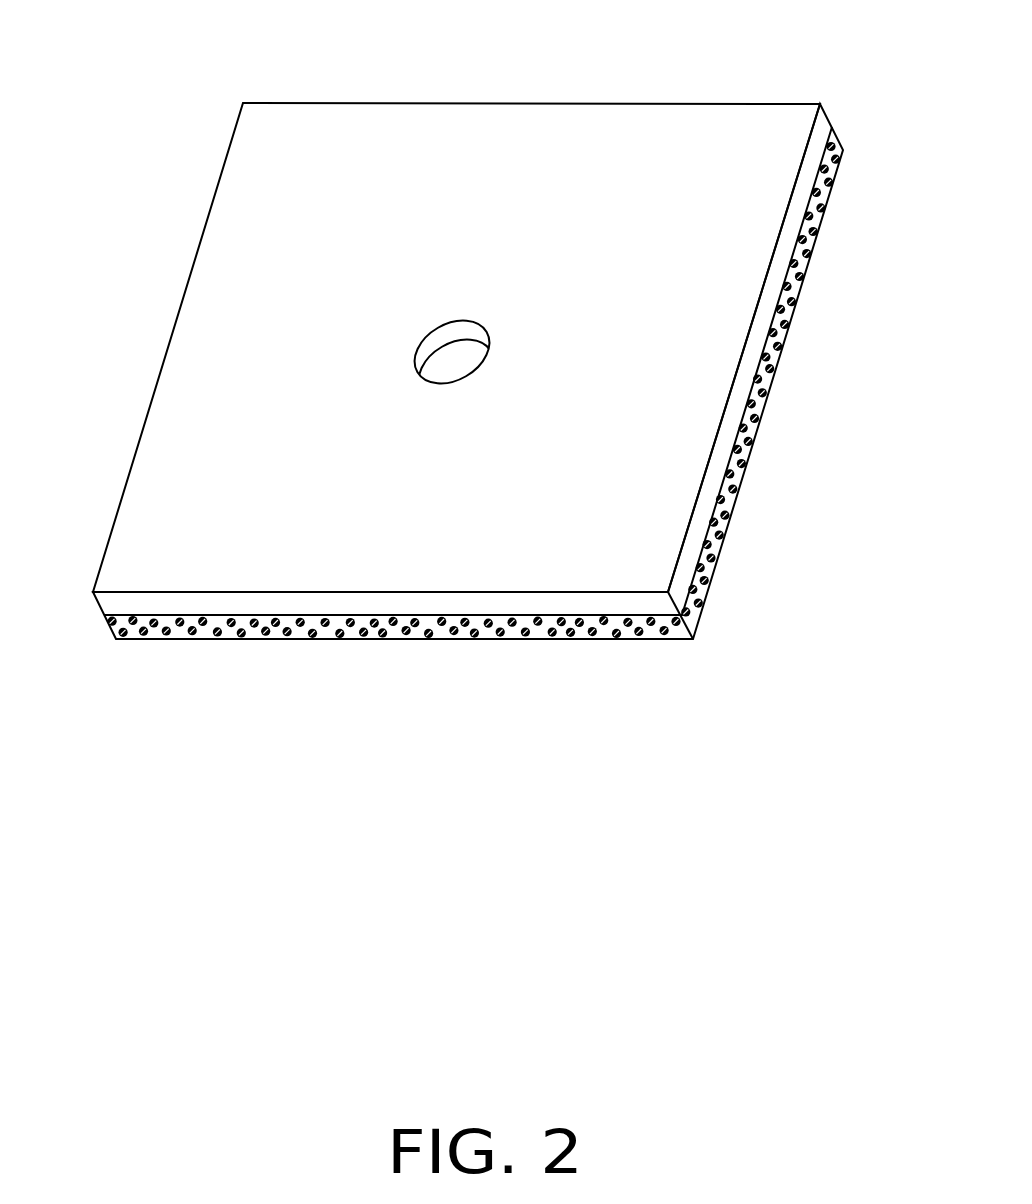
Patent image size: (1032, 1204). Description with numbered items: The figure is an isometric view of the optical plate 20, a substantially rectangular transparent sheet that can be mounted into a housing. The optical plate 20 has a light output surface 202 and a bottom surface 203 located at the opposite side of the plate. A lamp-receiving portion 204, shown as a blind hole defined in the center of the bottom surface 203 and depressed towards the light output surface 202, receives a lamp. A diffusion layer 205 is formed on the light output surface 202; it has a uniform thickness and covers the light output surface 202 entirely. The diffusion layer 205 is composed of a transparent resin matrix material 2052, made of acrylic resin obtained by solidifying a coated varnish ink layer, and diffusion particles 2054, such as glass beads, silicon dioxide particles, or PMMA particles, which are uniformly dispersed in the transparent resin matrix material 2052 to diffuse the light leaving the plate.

The optical plate 20 is at (202, 147).
The light output surface 202 is at (768, 358).
The bottom surface 203 is at (677, 137).
The lamp-receiving portion 204 is at (457, 362).
The diffusion layer 205 is at (474, 456).
The transparent resin matrix material 2052 is at (470, 632).
The diffusion particles 2054 is at (423, 715).